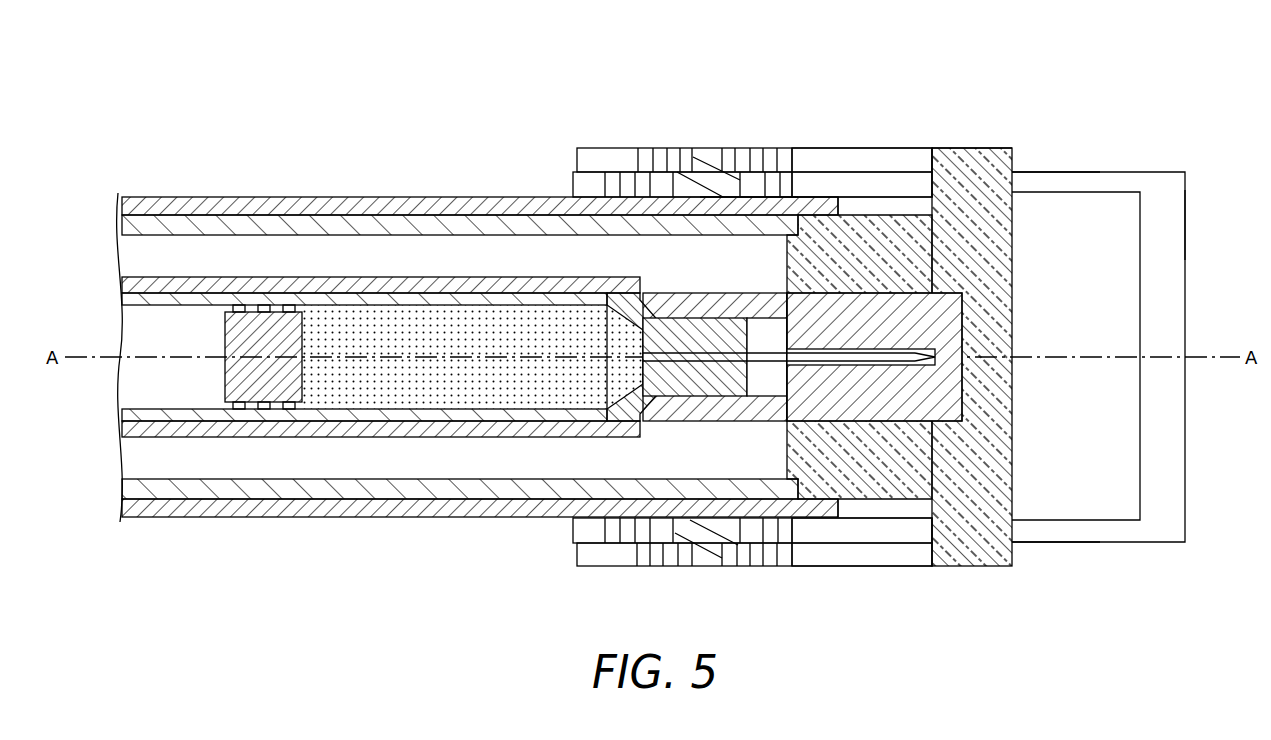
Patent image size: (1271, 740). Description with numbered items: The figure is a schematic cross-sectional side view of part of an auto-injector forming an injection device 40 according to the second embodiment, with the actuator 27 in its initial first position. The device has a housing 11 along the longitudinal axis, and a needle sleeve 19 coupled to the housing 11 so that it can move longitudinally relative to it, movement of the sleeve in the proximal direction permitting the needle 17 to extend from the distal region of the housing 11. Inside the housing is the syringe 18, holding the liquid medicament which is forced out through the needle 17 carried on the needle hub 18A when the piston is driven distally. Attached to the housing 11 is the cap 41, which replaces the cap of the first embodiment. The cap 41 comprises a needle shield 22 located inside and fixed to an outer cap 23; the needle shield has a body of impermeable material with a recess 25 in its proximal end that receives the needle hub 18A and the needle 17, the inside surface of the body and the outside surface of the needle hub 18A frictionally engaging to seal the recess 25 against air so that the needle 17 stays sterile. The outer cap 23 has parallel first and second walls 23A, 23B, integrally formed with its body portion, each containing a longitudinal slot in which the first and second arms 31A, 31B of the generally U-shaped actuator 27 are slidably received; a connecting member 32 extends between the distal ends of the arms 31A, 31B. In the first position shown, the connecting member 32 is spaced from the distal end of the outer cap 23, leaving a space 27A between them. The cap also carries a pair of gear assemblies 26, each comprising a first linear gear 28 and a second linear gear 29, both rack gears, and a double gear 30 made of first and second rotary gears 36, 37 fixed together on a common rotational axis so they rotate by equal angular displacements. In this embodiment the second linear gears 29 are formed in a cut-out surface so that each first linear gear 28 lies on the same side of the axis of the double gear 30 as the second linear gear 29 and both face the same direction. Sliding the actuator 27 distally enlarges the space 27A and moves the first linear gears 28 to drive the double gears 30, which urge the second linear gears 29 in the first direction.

The housing 11 is at (377, 205).
The needle 17 is at (762, 365).
The syringe 18 is at (400, 420).
The needle hub 18A is at (672, 380).
The needle sleeve 19 is at (512, 215).
The needle shield 22 is at (877, 410).
The outer cap 23 is at (975, 560).
The first wall 23A is at (805, 560).
The second wall 23B is at (888, 158).
The recess 25 is at (762, 337).
The gear assembly 26 is at (668, 101).
The actuator 27 is at (1175, 172).
The space 27A is at (1123, 410).
The first linear gear 28 is at (797, 158).
The second linear gear 29 is at (758, 158).
The double gear 30 is at (697, 158).
The first arm 31A is at (1068, 544).
The second arm 31B is at (1068, 172).
The connecting member 32 is at (1180, 216).
The first rotary gear 36 is at (697, 192).
The second rotary gear 37 is at (716, 158).
The injection device 40 is at (186, 104).
The cap 41 is at (1139, 90).